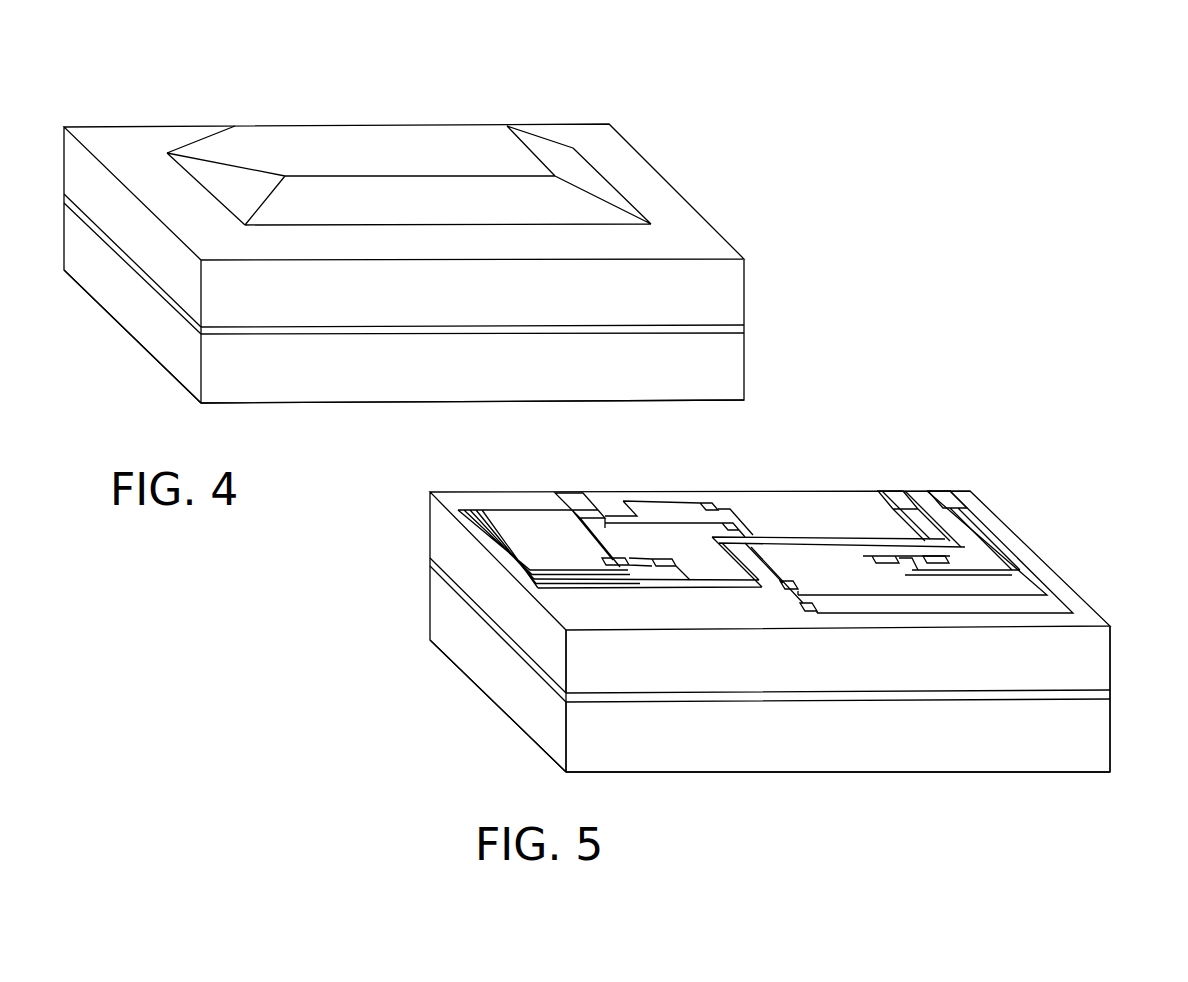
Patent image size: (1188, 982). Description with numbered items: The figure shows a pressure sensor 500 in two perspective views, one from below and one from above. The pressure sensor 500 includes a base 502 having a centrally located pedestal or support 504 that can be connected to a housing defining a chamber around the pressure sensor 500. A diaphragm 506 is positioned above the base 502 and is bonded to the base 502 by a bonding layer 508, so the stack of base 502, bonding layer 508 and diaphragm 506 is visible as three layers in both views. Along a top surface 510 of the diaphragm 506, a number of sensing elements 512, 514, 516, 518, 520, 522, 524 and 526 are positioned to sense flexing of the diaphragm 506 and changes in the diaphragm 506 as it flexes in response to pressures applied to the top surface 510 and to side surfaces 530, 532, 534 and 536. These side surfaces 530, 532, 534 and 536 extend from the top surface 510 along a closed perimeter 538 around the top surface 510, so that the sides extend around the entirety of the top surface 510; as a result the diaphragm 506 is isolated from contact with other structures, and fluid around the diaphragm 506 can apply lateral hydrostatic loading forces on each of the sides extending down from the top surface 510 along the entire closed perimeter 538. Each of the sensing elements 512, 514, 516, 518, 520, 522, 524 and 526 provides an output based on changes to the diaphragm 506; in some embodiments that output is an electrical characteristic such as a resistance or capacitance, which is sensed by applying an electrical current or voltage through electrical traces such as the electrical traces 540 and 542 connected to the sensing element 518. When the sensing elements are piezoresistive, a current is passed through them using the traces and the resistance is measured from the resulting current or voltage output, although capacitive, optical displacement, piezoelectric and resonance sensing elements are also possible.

In FIG. 4, the pressure sensor 500 is at (496, 223).
In FIG. 5, the pressure sensor 500 is at (726, 591).
In FIG. 4, the base 502 is at (738, 288).
In FIG. 5, the base 502 is at (463, 662).
In FIG. 4, the pedestal or support 504 is at (360, 157).
In FIG. 4, the diaphragm 506 is at (738, 390).
In FIG. 5, the diaphragm 506 is at (440, 542).
In FIG. 4, the bonding layer 508 is at (738, 333).
In FIG. 5, the bonding layer 508 is at (463, 600).
In FIG. 5, the top surface 510 is at (786, 573).
In FIG. 5, the sensing element 512 is at (704, 502).
In FIG. 5, the sensing element 514 is at (733, 524).
In FIG. 5, the sensing element 516 is at (662, 567).
In FIG. 5, the sensing element 518 is at (619, 566).
In FIG. 5, the sensing element 520 is at (786, 592).
In FIG. 5, the sensing element 522 is at (810, 613).
In FIG. 5, the sensing element 524 is at (937, 565).
In FIG. 5, the sensing element 526 is at (880, 563).
In FIG. 5, the side surface 530 is at (557, 648).
In FIG. 5, the side surface 532 is at (677, 688).
In FIG. 5, the side surface 534 is at (567, 492).
In FIG. 5, the side surface 536 is at (1072, 585).
In FIG. 5, the closed perimeter 538 is at (1112, 627).
In FIG. 5, the electrical trace 540 is at (517, 502).
In FIG. 5, the electrical trace 542 is at (580, 523).